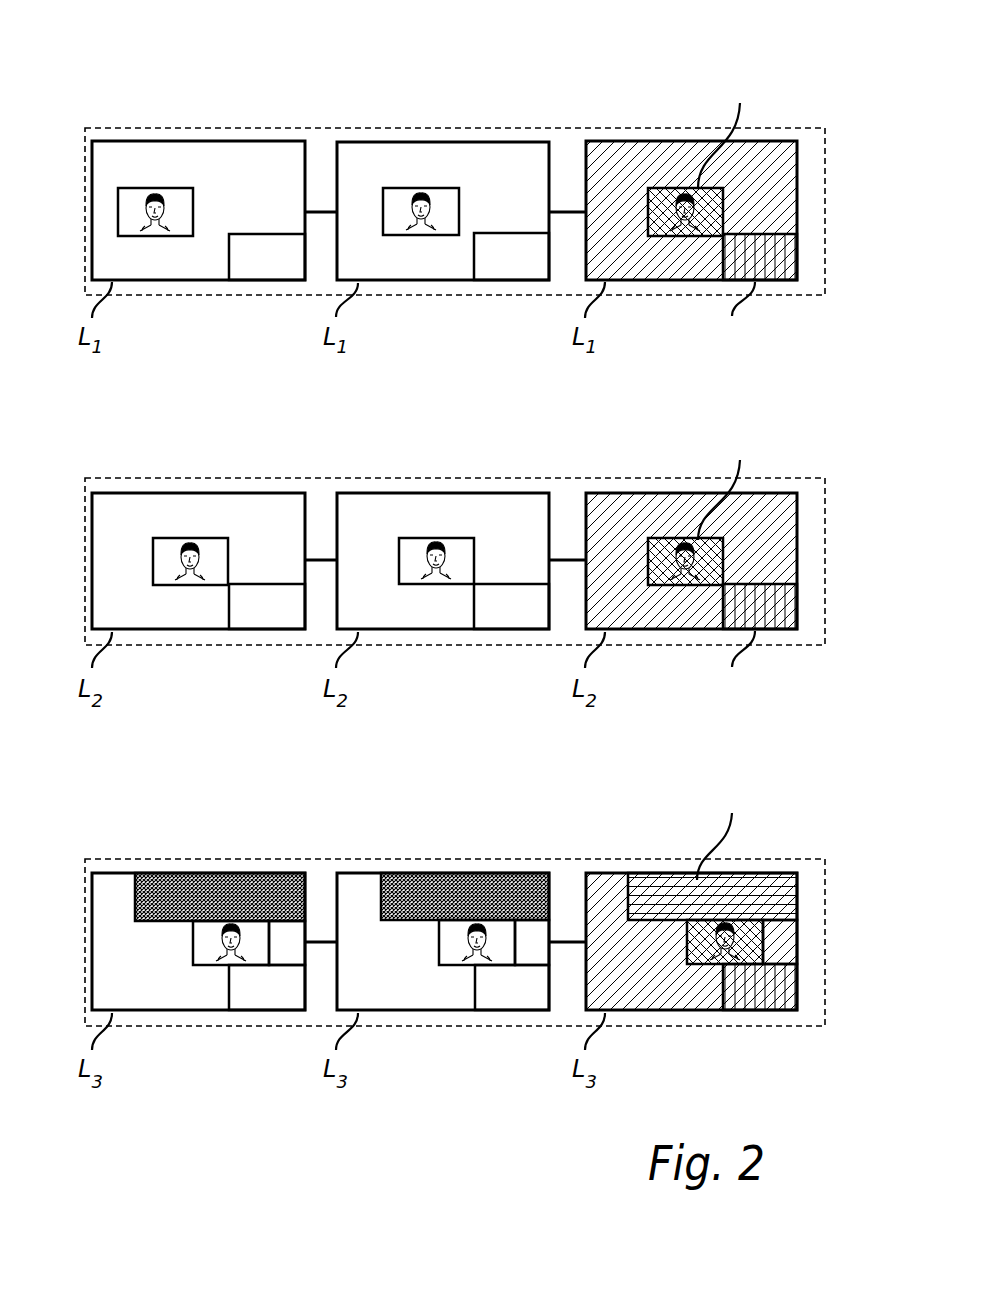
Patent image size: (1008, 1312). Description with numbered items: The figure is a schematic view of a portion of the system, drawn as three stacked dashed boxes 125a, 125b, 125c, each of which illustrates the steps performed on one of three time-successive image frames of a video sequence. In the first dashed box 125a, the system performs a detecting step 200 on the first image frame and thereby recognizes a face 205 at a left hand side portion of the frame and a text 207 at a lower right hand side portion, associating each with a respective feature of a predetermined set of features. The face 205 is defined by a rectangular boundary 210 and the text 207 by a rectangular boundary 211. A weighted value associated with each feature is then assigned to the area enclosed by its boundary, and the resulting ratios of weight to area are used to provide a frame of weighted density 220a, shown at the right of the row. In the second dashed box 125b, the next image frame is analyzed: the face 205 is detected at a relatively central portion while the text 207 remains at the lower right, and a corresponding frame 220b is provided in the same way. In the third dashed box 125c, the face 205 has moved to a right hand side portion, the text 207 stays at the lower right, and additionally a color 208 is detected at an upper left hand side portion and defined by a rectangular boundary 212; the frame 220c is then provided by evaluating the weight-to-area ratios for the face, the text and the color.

The detecting step 200 is at (110, 140).
The first dashed box 125a is at (323, 128).
The second dashed box 125b is at (323, 478).
The third dashed box 125c is at (325, 858).
The face 205 is at (172, 202).
The text 207 is at (257, 282).
The rectangular boundary of the face 210 is at (436, 190).
The rectangular boundary of the text 211 is at (503, 283).
The color 208 is at (212, 878).
The rectangular boundary of the color 212 is at (488, 878).
The frame of weighted density 220a is at (790, 140).
The frame of weighted density 220b is at (790, 493).
The frame of weighted density 220c is at (788, 872).